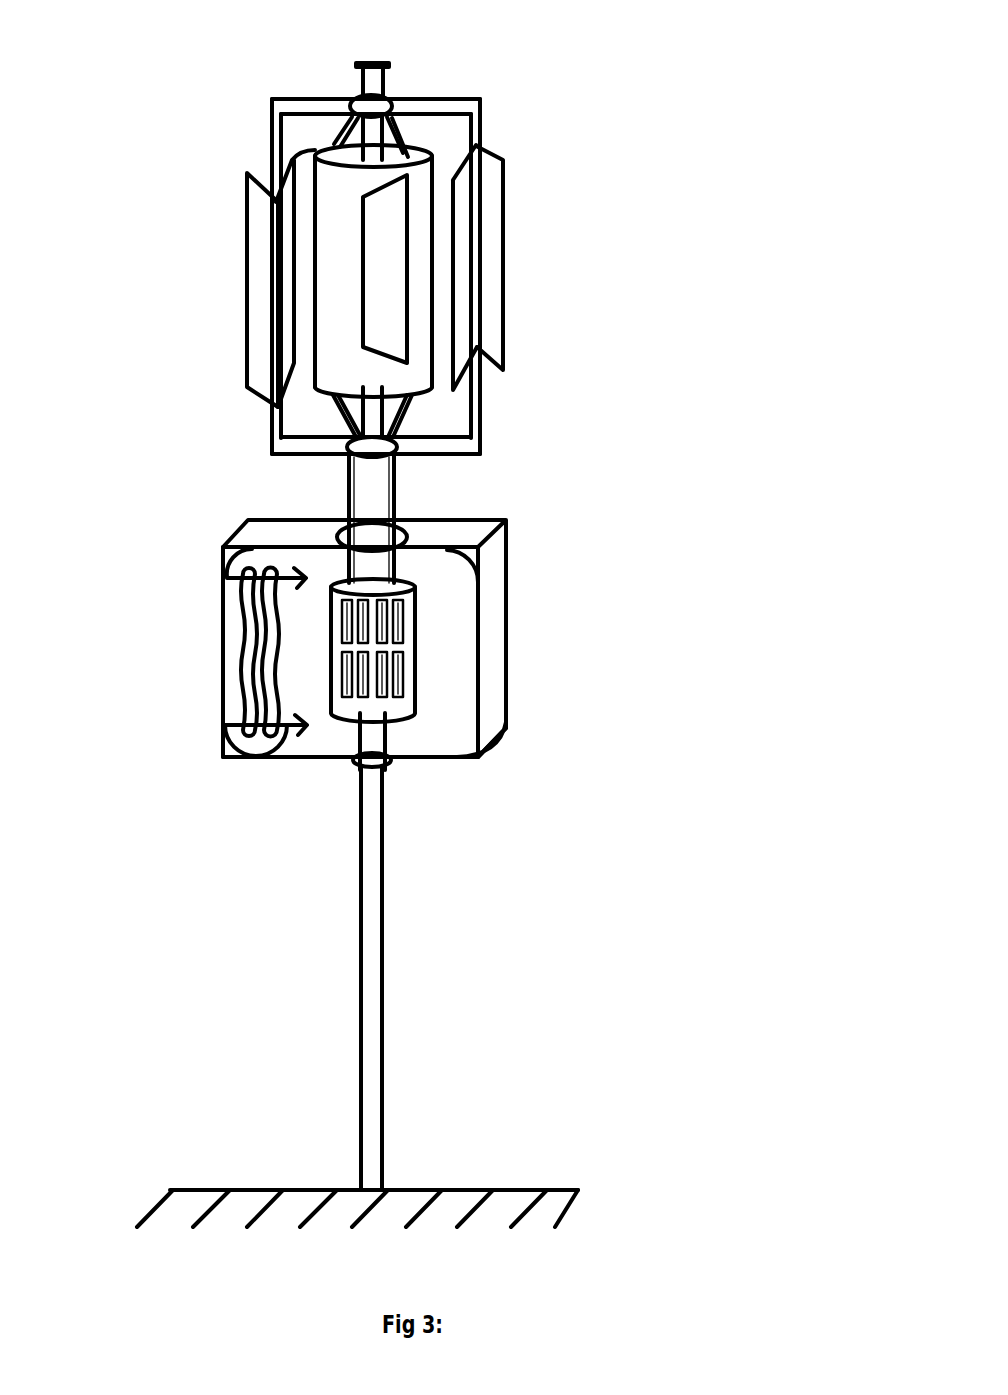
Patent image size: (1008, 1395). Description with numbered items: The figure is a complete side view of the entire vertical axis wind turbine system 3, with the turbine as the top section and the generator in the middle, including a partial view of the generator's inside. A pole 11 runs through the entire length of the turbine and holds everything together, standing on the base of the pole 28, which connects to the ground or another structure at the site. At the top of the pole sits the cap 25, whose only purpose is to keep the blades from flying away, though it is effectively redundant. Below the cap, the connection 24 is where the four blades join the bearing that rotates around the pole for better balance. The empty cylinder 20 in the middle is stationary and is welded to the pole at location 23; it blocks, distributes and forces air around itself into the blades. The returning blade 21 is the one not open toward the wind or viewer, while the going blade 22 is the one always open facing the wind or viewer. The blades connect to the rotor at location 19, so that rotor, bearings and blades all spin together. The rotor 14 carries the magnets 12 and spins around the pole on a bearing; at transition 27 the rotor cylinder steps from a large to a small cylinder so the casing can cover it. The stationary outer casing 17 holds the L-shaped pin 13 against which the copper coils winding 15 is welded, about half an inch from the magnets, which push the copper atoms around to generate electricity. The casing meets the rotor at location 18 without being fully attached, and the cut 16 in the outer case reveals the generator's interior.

The turbine system 3 is at (628, 178).
The pole 11 is at (372, 1027).
The magnets 12 is at (342, 680).
The L-shaped pin 13 is at (257, 762).
The rotor 14 is at (328, 645).
The copper coils winding 15 is at (242, 622).
The cut in outer case 16 is at (478, 742).
The outer casing 17 is at (490, 640).
The junction of outer casing and rotor 18 is at (397, 523).
The rotor-blade connection 19 is at (370, 443).
The empty cylinder 20 is at (425, 340).
The returning blade 21 is at (247, 310).
The going blade 22 is at (505, 265).
The cylinder weld to pole 23 is at (312, 165).
The blade-to-bearing connection 24 is at (392, 98).
The cap 25 is at (360, 66).
The rotor cylinder shape transition 27 is at (393, 583).
The base of the pole 28 is at (530, 1188).